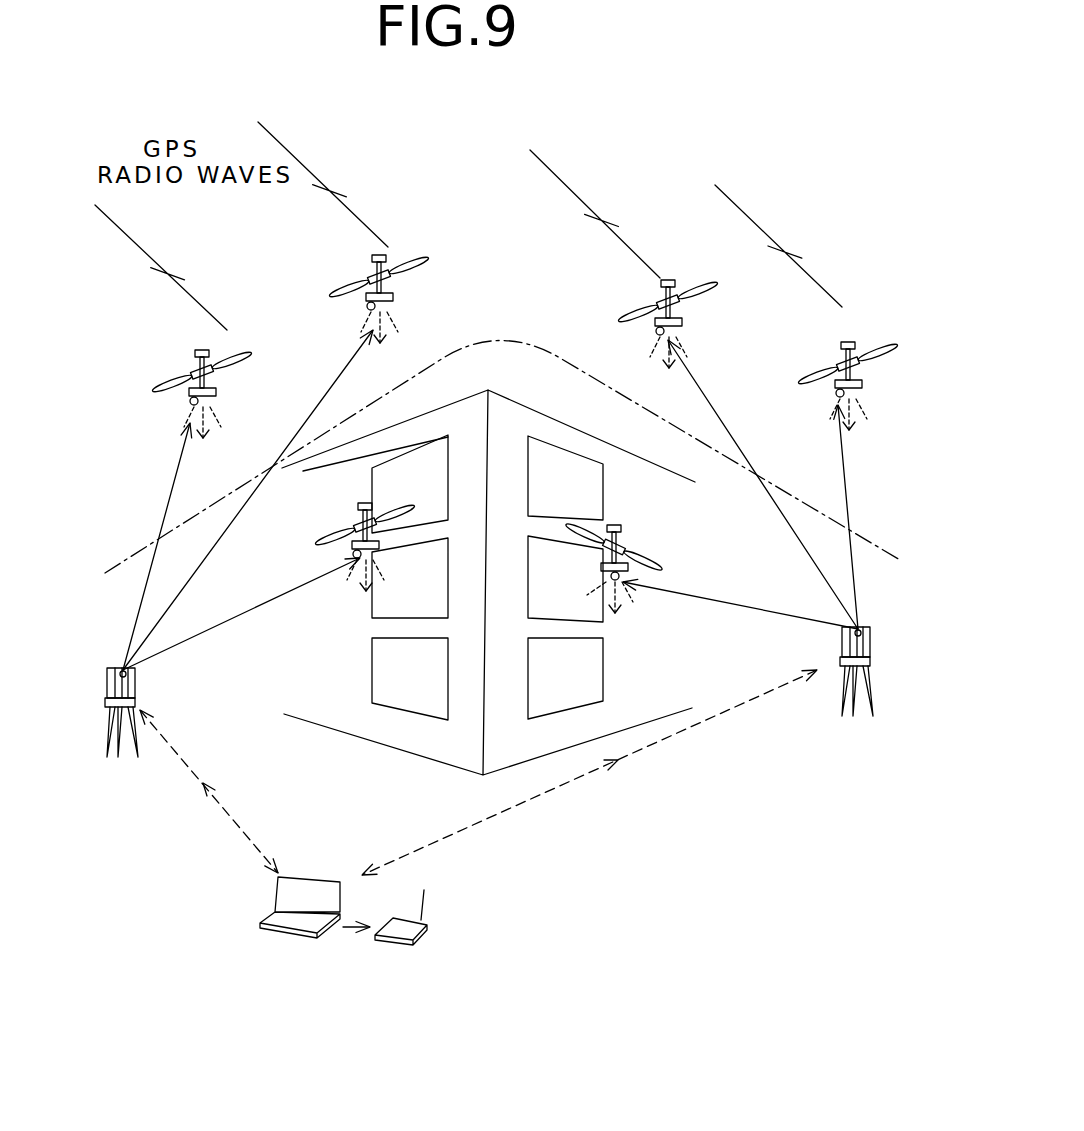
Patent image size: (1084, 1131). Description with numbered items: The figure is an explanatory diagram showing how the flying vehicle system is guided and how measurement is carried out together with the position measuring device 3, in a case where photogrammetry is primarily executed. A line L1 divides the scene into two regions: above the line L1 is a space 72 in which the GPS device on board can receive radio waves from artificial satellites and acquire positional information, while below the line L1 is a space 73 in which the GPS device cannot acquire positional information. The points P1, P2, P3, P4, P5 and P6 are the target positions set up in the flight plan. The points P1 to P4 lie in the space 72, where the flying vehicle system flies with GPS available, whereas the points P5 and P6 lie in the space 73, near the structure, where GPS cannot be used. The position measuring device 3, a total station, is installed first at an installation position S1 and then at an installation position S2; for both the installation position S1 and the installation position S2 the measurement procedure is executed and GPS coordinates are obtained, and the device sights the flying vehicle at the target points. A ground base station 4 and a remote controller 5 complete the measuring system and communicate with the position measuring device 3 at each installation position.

The position measuring device 3 is at (489, 719).
The ground base station 4 is at (270, 923).
The remote controller 5 is at (430, 922).
The space 72 is at (488, 199).
The space 73 is at (267, 692).
The point P1 is at (187, 381).
The point P2 is at (364, 288).
The point P3 is at (649, 317).
The point P4 is at (827, 375).
The point P5 is at (352, 542).
The point P6 is at (628, 565).
The installation position S1 is at (127, 739).
The installation position S2 is at (849, 696).
The line L1 is at (133, 558).